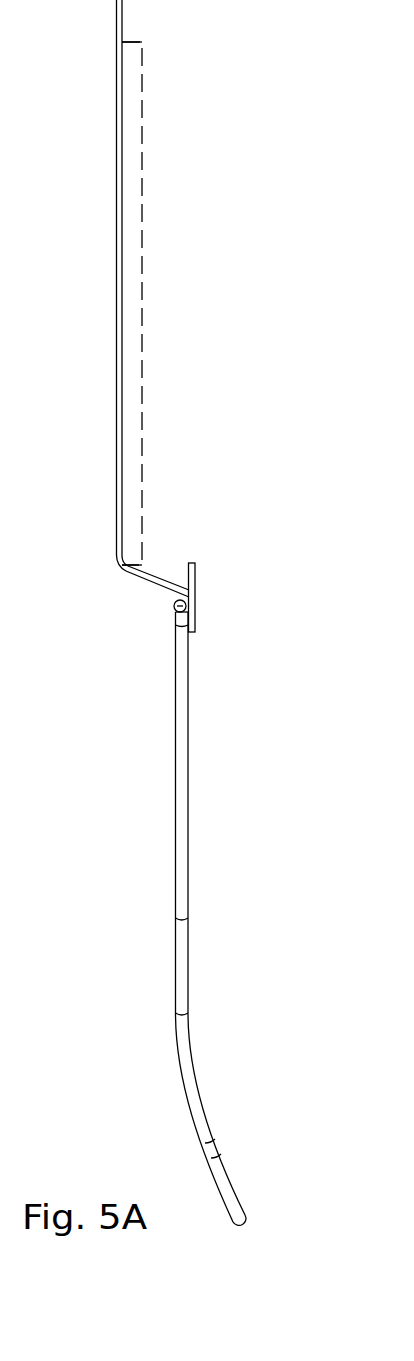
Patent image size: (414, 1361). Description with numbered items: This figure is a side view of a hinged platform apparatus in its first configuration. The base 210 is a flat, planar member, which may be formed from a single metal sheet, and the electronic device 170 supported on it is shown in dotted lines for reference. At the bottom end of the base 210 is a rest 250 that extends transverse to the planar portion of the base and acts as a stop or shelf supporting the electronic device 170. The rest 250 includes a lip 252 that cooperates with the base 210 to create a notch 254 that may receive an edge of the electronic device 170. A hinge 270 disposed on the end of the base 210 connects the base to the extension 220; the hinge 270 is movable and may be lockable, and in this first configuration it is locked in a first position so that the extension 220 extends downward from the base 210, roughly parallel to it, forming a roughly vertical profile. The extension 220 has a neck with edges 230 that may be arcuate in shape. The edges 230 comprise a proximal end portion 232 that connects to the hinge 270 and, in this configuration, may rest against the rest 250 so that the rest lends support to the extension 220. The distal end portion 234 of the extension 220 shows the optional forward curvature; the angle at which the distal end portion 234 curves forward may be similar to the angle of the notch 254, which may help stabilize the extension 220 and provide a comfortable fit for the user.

The electronic device 170 is at (143, 136).
The base 210 is at (116, 263).
The extension 220 is at (160, 918).
The edges 230 is at (175, 888).
The proximal end portion 232 is at (177, 655).
The distal end portion 234 is at (208, 1147).
The rest 250 is at (198, 591).
The lip 252 is at (196, 618).
The notch 254 is at (157, 580).
The hinge 270 is at (175, 608).